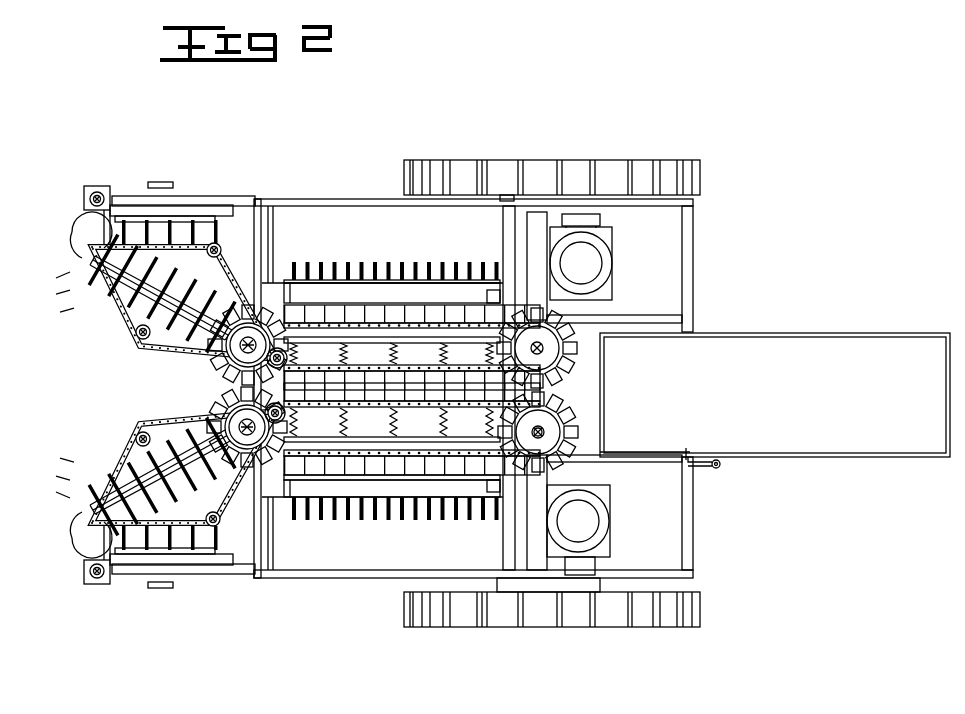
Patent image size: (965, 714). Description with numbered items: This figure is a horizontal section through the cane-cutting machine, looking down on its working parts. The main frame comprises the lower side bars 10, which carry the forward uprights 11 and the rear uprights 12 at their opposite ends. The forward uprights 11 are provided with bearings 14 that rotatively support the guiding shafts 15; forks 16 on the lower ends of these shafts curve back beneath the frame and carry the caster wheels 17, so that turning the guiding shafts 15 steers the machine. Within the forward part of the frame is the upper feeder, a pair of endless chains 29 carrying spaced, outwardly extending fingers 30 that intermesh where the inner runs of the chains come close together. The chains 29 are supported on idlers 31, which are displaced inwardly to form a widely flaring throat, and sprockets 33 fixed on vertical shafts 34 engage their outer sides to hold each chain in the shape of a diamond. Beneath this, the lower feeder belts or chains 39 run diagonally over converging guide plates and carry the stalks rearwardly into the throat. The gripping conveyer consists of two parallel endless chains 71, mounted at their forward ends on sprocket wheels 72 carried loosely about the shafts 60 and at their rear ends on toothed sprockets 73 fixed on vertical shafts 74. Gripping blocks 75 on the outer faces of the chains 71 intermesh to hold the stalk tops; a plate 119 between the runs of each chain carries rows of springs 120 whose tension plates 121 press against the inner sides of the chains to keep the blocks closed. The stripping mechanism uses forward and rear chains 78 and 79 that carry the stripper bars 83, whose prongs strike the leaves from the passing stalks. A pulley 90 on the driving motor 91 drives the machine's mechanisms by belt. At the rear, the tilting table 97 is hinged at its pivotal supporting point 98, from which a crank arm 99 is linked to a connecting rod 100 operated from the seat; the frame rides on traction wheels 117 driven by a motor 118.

The lower side bars 10 is at (310, 203).
The forward uprights 11 is at (114, 204).
The rear uprights 12 is at (503, 210).
The bearings 14 is at (98, 186).
The guiding shafts 15 is at (88, 200).
The forks 16 is at (163, 181).
The caster wheels 17 is at (199, 196).
The endless chains 29 is at (172, 278).
The fingers 30 is at (235, 254).
The idlers 31 is at (135, 334).
The sprockets 33 is at (218, 244).
The vertical shafts 34 is at (217, 258).
The endless belts or chains 39 is at (110, 310).
The shafts 60 is at (232, 366).
The endless chains 71 is at (347, 318).
The sprocket wheels 72 is at (258, 333).
The toothed sprockets 73 is at (560, 348).
The vertical shafts 74 is at (540, 430).
The gripping blocks 75 is at (422, 310).
The forward chains 78 is at (275, 283).
The rear chains 79 is at (486, 295).
The stripper bars 83 is at (388, 278).
The pulley 90 is at (602, 218).
The driving motor 91 is at (581, 263).
The tilting table 97 is at (775, 395).
The pivotal supporting point 98 is at (692, 455).
The crank arm 99 is at (700, 470).
The connecting rod 100 is at (720, 465).
The traction wheels 117 is at (575, 620).
The motor 118 is at (598, 522).
The plate 119 is at (410, 364).
The springs 120 is at (348, 352).
The tension plates 121 is at (480, 360).